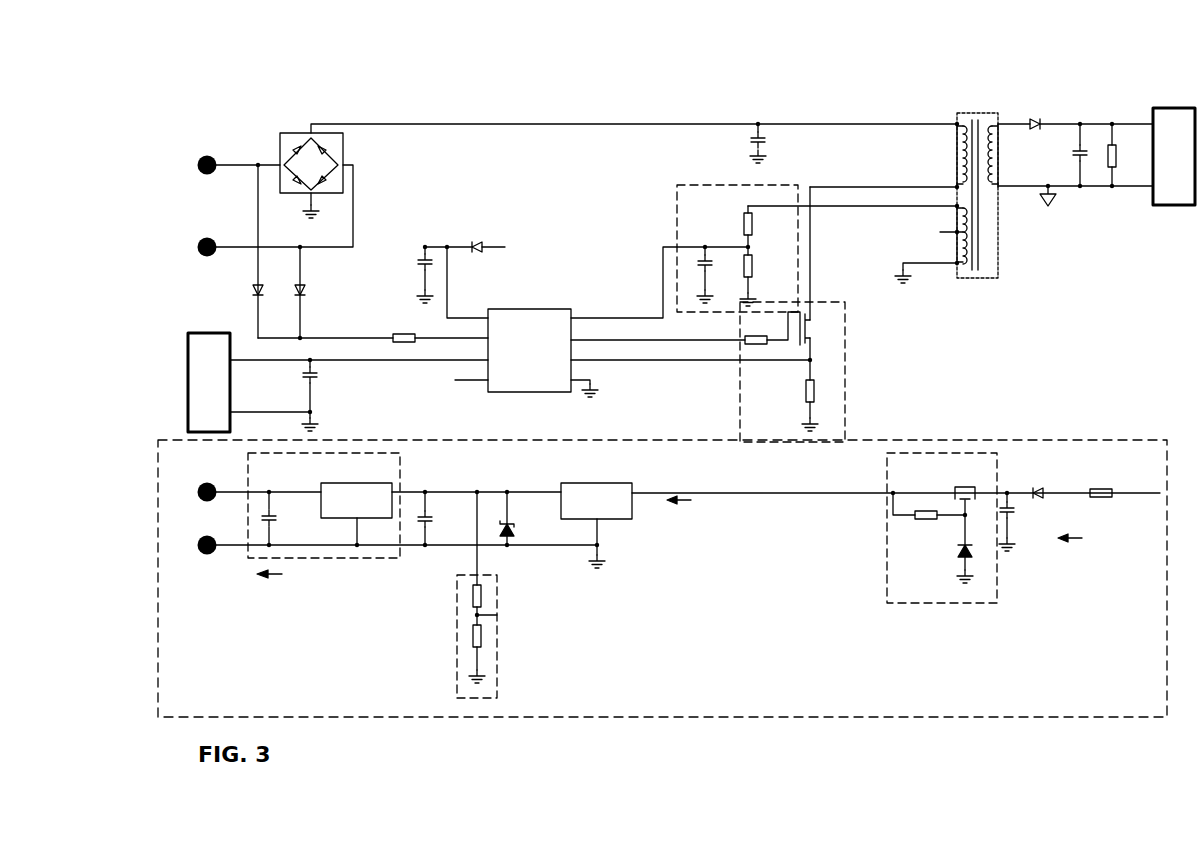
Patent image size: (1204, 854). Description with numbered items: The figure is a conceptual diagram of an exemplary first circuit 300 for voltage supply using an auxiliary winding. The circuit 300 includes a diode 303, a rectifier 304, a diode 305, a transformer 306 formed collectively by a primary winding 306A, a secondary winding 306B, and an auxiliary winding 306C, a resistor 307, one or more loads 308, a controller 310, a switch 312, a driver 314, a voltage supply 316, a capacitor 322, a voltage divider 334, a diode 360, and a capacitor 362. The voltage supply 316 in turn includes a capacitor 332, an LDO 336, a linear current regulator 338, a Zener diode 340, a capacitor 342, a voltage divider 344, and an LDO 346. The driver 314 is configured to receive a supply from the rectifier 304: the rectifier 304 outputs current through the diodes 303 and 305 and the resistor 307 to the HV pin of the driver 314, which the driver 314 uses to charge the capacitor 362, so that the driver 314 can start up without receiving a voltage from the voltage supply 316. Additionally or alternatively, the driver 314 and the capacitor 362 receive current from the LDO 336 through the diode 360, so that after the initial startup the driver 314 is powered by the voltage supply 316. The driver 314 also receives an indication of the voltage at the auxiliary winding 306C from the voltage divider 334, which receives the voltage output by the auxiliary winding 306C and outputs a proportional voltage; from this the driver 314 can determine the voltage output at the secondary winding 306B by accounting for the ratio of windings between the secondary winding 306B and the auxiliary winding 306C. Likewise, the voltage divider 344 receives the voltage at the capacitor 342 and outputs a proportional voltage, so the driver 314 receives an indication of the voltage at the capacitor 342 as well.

The first circuit 300 is at (1104, 50).
The diode 303 is at (252, 285).
The rectifier 304 is at (283, 134).
The diode 305 is at (298, 285).
The transformer 306 is at (960, 112).
The primary winding 306A is at (952, 160).
The secondary winding 306B is at (992, 190).
The auxiliary winding 306C is at (952, 234).
The resistor 307 is at (393, 334).
The one or more loads 308 is at (1150, 107).
The controller 310 is at (190, 332).
The switch 312 is at (846, 345).
The driver 314 is at (488, 310).
The voltage supply 316 is at (170, 439).
The capacitor 322 is at (1078, 135).
The capacitor 332 is at (1010, 522).
The voltage divider 334 is at (690, 185).
The LDO 336 is at (887, 547).
The linear current regulator 338 is at (559, 486).
The Zener diode 340 is at (509, 550).
The capacitor 342 is at (430, 538).
The voltage divider 344 is at (457, 671).
The LDO 346 is at (248, 470).
The diode 360 is at (490, 252).
The capacitor 362 is at (419, 255).